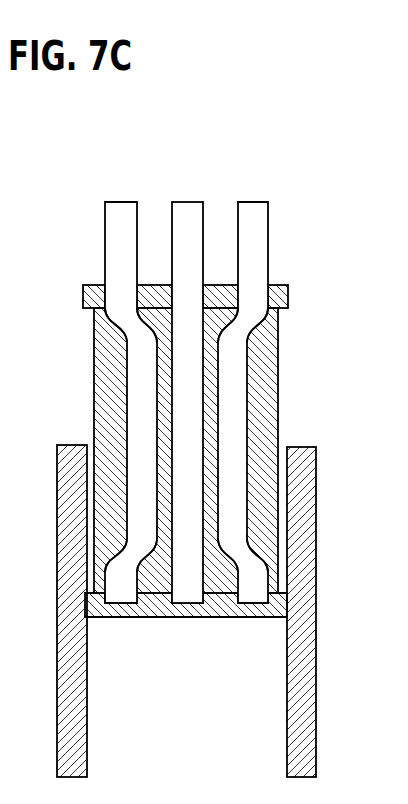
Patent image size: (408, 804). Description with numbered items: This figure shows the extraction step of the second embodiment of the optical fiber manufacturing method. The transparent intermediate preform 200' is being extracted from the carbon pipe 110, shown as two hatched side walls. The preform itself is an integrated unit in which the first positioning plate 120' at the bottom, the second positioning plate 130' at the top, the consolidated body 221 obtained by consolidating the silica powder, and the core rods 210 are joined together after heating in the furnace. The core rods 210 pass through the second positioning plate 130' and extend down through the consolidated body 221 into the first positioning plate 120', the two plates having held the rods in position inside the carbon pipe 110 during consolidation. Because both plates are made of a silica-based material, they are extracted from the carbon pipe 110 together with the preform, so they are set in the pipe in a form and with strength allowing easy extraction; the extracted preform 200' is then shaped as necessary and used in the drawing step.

The carbon pipe 110 is at (311, 620).
The first positioning plate 120' is at (186, 629).
The second positioning plate 130' is at (205, 275).
The transparent intermediate preform 200' is at (212, 380).
The core rods 210 is at (120, 204).
The consolidated body 221 is at (158, 324).